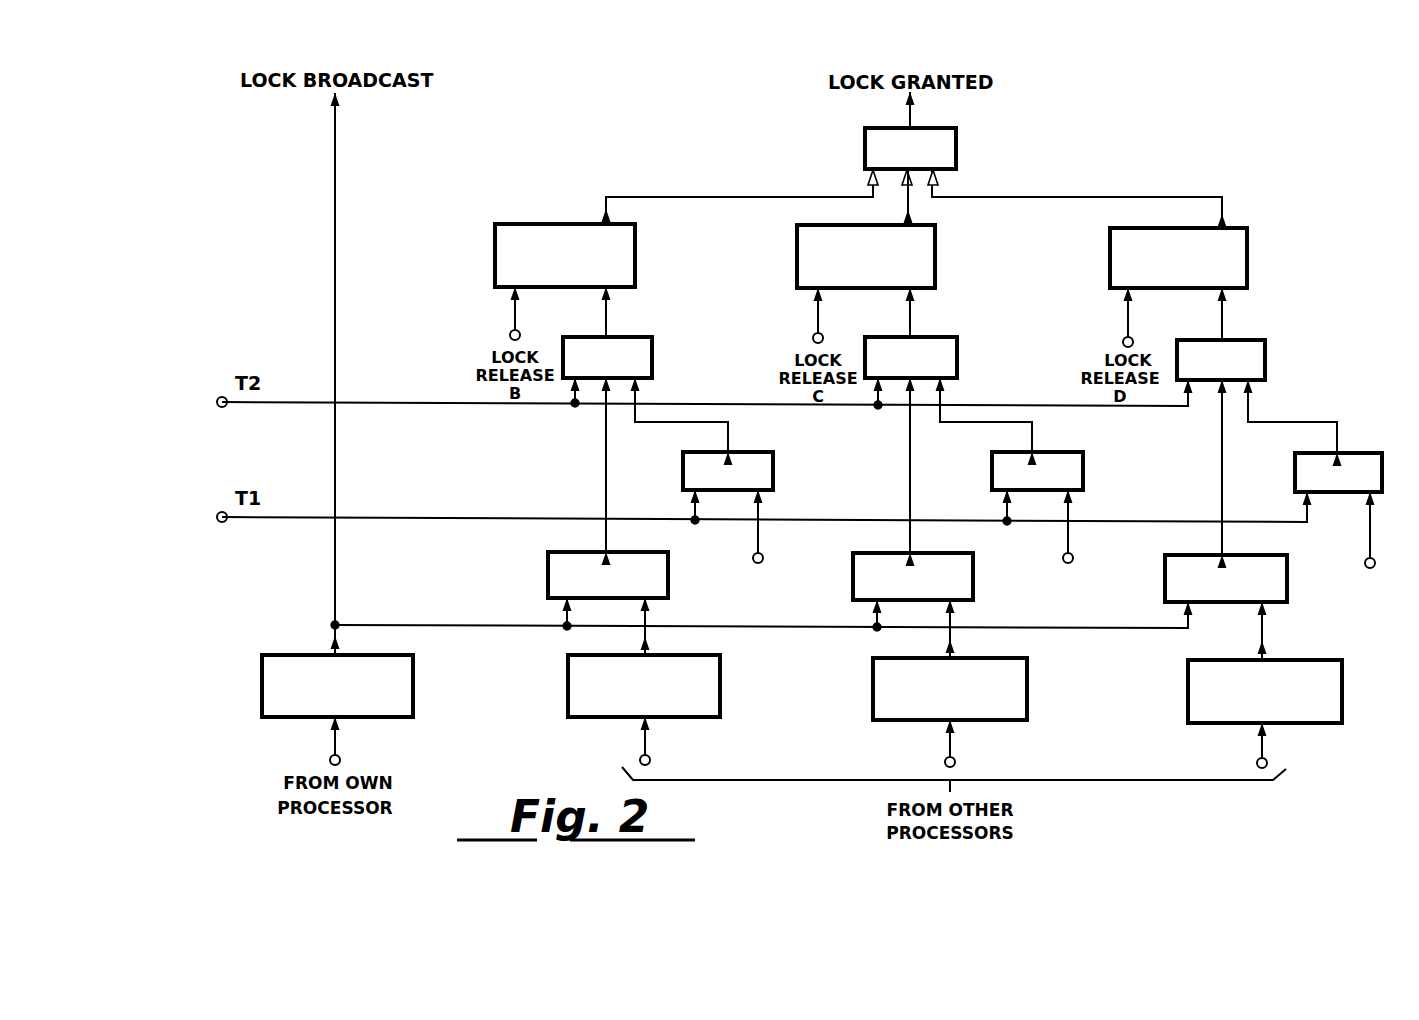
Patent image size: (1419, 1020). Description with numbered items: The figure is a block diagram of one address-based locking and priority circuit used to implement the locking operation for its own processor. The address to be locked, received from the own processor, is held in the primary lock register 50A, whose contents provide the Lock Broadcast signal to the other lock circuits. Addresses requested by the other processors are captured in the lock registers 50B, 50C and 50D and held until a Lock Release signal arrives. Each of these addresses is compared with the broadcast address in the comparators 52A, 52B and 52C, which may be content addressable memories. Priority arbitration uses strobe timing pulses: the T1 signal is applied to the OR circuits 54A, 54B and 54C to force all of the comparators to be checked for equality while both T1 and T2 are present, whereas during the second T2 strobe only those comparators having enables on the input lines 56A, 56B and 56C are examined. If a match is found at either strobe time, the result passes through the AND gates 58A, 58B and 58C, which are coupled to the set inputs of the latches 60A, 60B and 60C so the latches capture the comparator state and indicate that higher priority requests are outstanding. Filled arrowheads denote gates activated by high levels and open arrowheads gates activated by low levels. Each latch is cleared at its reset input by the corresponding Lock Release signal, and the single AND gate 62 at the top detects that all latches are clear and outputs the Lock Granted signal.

The primary lock register 50A is at (297, 717).
The lock register 50B is at (605, 717).
The lock register 50C is at (908, 720).
The lock register 50D is at (1210, 723).
The comparator 52A is at (668, 565).
The comparator 52B is at (973, 568).
The comparator 52C is at (1287, 572).
The OR circuit 54A is at (773, 465).
The OR circuit 54B is at (1083, 467).
The OR circuit 54C is at (1382, 468).
The input line 56A is at (758, 547).
The input line 56B is at (1068, 547).
The input line 56C is at (1370, 548).
The AND gate 58A is at (652, 355).
The AND gate 58B is at (957, 355).
The AND gate 58C is at (1265, 357).
The latch 60A is at (495, 258).
The latch 60B is at (797, 260).
The latch 60C is at (1110, 260).
The AND gate 62 is at (956, 145).